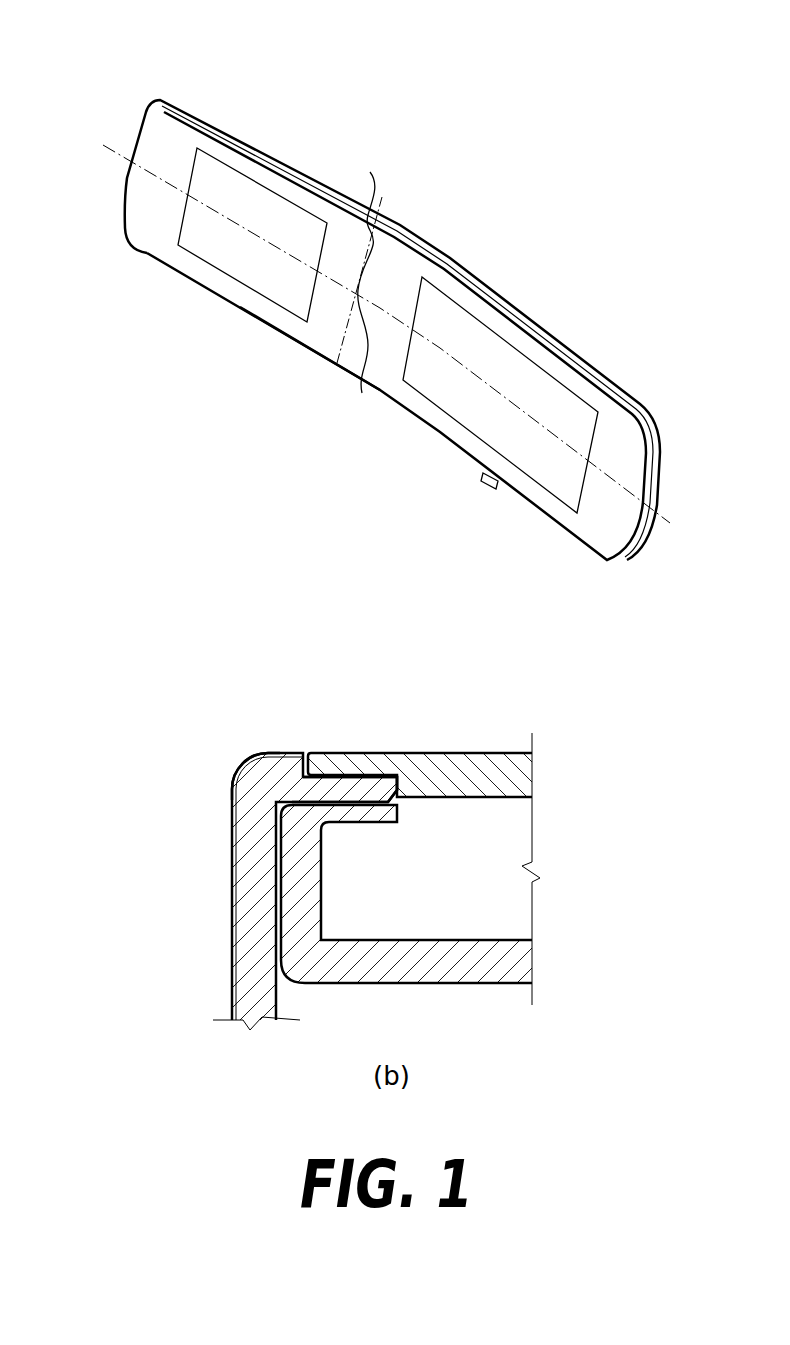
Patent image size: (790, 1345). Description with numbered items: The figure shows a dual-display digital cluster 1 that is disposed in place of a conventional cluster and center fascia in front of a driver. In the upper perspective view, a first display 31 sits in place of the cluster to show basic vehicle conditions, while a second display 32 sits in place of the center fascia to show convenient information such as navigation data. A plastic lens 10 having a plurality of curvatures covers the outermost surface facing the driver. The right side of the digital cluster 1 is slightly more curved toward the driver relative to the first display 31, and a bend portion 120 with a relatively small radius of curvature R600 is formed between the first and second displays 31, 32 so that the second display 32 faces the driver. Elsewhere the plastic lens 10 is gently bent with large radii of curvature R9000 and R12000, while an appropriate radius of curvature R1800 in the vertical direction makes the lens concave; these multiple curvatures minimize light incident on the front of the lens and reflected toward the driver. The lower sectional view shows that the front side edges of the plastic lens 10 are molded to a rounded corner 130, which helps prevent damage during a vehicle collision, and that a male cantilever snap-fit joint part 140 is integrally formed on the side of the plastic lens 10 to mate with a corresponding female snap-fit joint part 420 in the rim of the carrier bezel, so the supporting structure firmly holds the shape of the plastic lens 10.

The digital cluster 1 is at (190, 43).
The plastic lens 10 is at (137, 197).
The first display 31 is at (233, 268).
The second display 32 is at (476, 424).
The bend portion 120 is at (327, 340).
The rounded corner 130 is at (250, 757).
The male cantilever snap-fit joint part 140 is at (347, 780).
The female snap-fit joint part 420 is at (453, 760).
The radius of curvature R9000 is at (205, 203).
The radius of curvature R1800 is at (366, 271).
The radius of curvature R600 is at (358, 408).
The radius of curvature R12000 is at (550, 435).